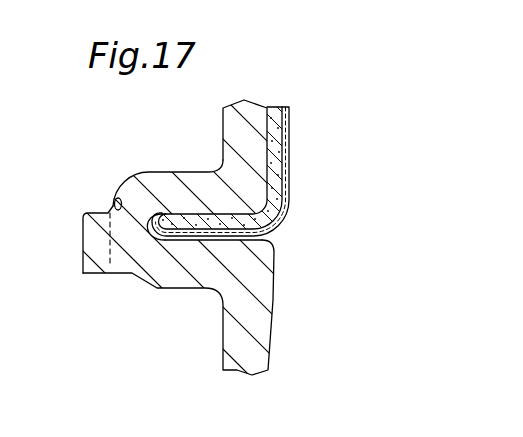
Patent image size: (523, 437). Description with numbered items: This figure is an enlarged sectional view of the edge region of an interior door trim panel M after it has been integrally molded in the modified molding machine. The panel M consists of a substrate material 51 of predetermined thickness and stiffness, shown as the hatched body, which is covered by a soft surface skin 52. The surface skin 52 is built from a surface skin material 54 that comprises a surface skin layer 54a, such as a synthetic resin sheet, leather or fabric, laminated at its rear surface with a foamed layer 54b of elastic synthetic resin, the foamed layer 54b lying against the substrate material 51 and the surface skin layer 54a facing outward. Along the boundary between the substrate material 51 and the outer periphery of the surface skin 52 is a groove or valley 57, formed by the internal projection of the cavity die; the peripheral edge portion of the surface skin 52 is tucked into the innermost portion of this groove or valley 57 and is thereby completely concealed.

The interior door trim panel M is at (136, 291).
The substrate material 51 is at (166, 183).
The surface skin 52 is at (221, 150).
The surface skin material 54 is at (221, 150).
The surface skin layer 54a is at (291, 130).
The foamed layer 54b is at (278, 107).
The groove or valley 57 is at (271, 233).